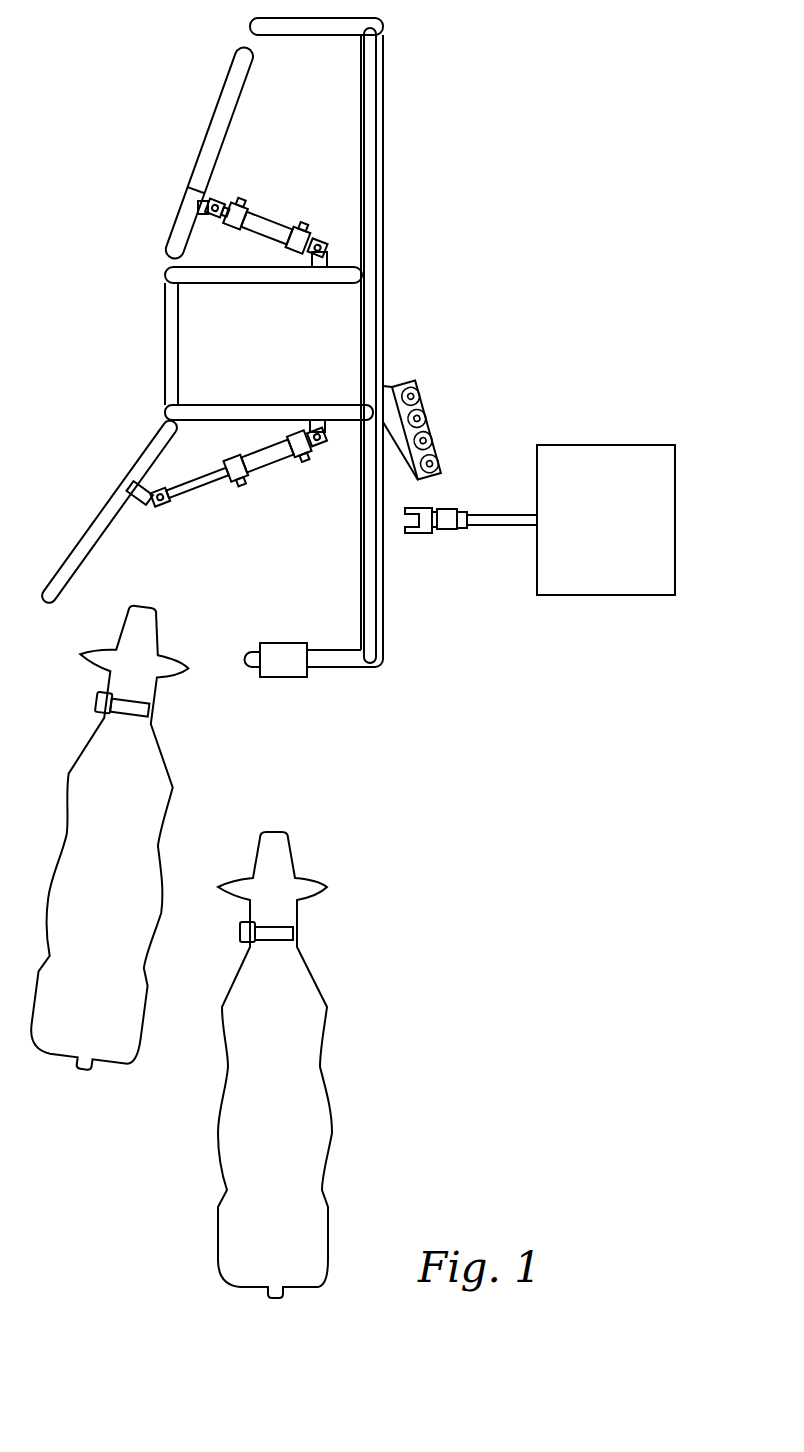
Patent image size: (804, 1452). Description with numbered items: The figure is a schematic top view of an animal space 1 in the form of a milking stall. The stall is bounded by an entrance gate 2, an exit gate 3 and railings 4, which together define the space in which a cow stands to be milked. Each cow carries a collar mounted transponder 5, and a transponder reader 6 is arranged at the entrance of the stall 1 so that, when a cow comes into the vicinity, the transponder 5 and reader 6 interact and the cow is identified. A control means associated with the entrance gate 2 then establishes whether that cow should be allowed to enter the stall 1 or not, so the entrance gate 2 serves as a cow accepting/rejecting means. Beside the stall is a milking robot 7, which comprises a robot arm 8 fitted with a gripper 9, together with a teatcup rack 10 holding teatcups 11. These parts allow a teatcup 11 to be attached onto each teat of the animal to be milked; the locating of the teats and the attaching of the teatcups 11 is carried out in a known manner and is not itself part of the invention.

The animal space 1 is at (295, 147).
The entrance gate 2 is at (87, 542).
The exit gate 3 is at (221, 97).
The railings 4 is at (367, 214).
The collar mounted transponder 5 is at (88, 702).
The transponder reader 6 is at (283, 668).
The milking robot 7 is at (618, 457).
The robot arm 8 is at (486, 522).
The gripper 9 is at (421, 535).
The teatcup rack 10 is at (394, 385).
The teatcups 11 is at (417, 390).